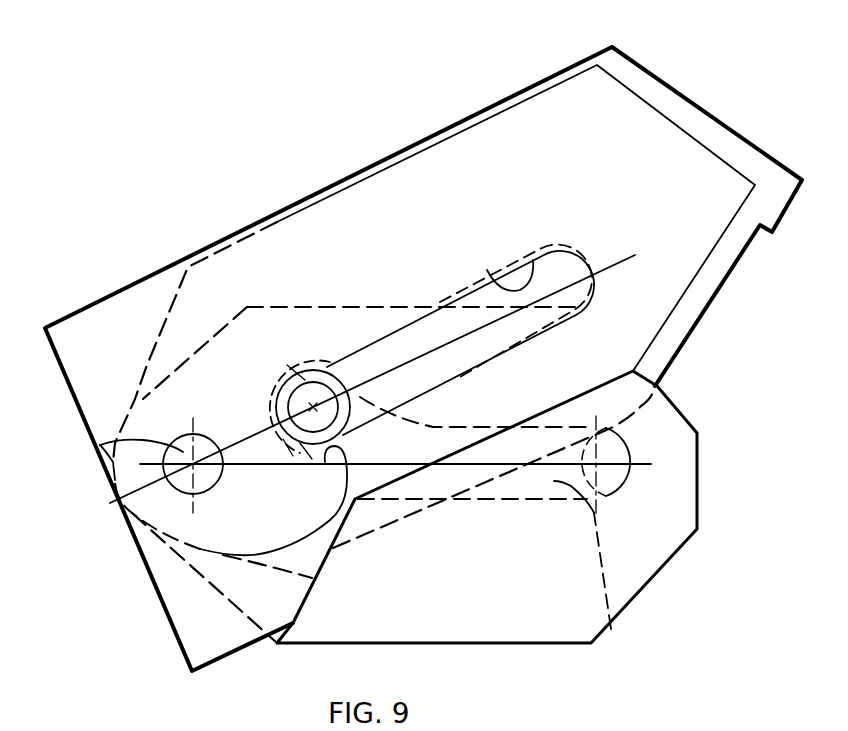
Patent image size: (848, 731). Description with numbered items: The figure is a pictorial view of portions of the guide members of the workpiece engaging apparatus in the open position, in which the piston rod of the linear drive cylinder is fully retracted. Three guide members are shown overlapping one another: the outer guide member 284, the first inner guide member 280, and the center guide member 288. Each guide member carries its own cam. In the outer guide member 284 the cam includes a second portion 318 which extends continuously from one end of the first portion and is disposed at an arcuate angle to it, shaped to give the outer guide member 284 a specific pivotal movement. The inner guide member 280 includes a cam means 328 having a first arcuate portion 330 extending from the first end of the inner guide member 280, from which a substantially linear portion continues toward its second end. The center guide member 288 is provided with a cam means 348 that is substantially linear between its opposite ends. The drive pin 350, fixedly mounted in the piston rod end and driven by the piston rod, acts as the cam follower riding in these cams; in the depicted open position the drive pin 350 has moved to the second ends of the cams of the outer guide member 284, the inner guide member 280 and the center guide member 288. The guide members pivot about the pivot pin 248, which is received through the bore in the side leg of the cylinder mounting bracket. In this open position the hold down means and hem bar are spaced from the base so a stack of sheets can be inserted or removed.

The pivot pin 248 is at (187, 452).
The first inner guide member 280 is at (494, 586).
The outer guide member 284 is at (718, 120).
The center guide member 288 is at (77, 312).
The second portion 318 is at (482, 262).
The cam means 328 is at (611, 629).
The first arcuate portion 330 is at (233, 557).
The cam means 348 is at (392, 343).
The drive pin 350 is at (316, 395).